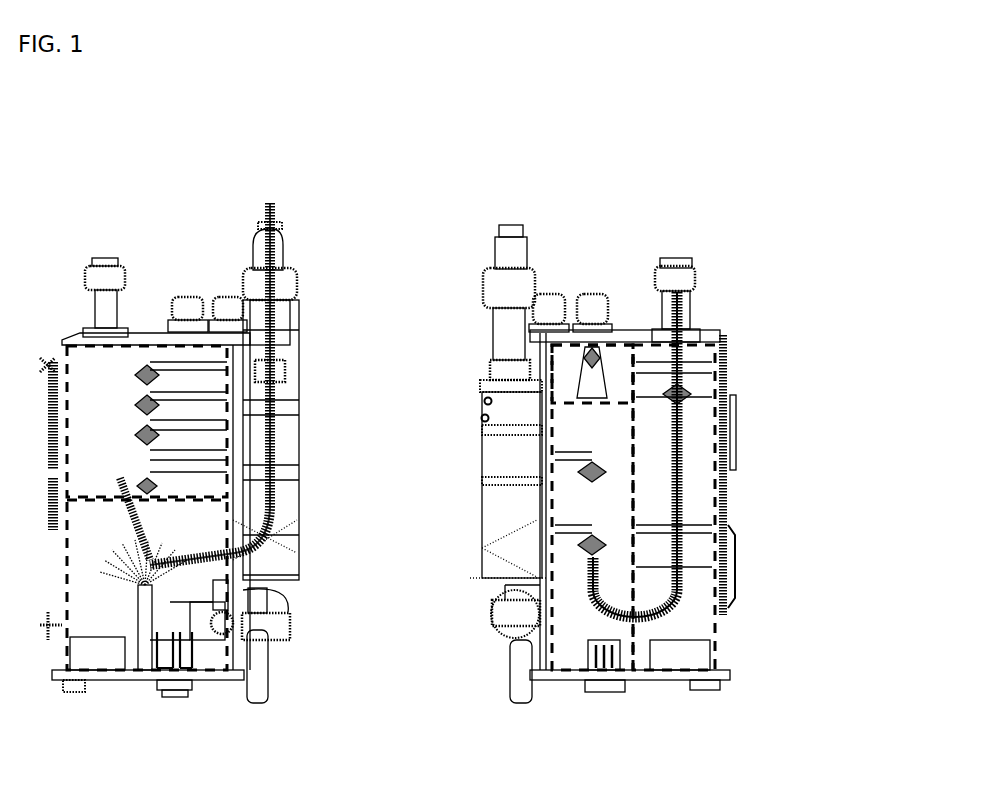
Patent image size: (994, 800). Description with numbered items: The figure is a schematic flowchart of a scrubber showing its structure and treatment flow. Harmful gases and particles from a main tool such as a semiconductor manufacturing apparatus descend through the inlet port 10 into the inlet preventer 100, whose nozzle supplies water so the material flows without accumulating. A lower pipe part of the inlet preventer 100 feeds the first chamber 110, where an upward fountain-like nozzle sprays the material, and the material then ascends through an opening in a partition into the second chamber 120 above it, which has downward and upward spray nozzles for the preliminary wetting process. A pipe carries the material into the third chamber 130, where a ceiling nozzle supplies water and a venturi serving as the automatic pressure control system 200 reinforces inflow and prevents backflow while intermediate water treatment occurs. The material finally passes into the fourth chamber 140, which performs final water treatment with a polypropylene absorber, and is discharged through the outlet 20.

The inlet preventer 100 is at (313, 285).
The inlet port 10 is at (270, 245).
The outlet 20 is at (676, 298).
The first chamber 110 is at (152, 533).
The second chamber 120 is at (135, 363).
The third chamber 130 is at (617, 533).
The fourth chamber 140 is at (682, 452).
The automatic pressure control system 200 is at (617, 382).